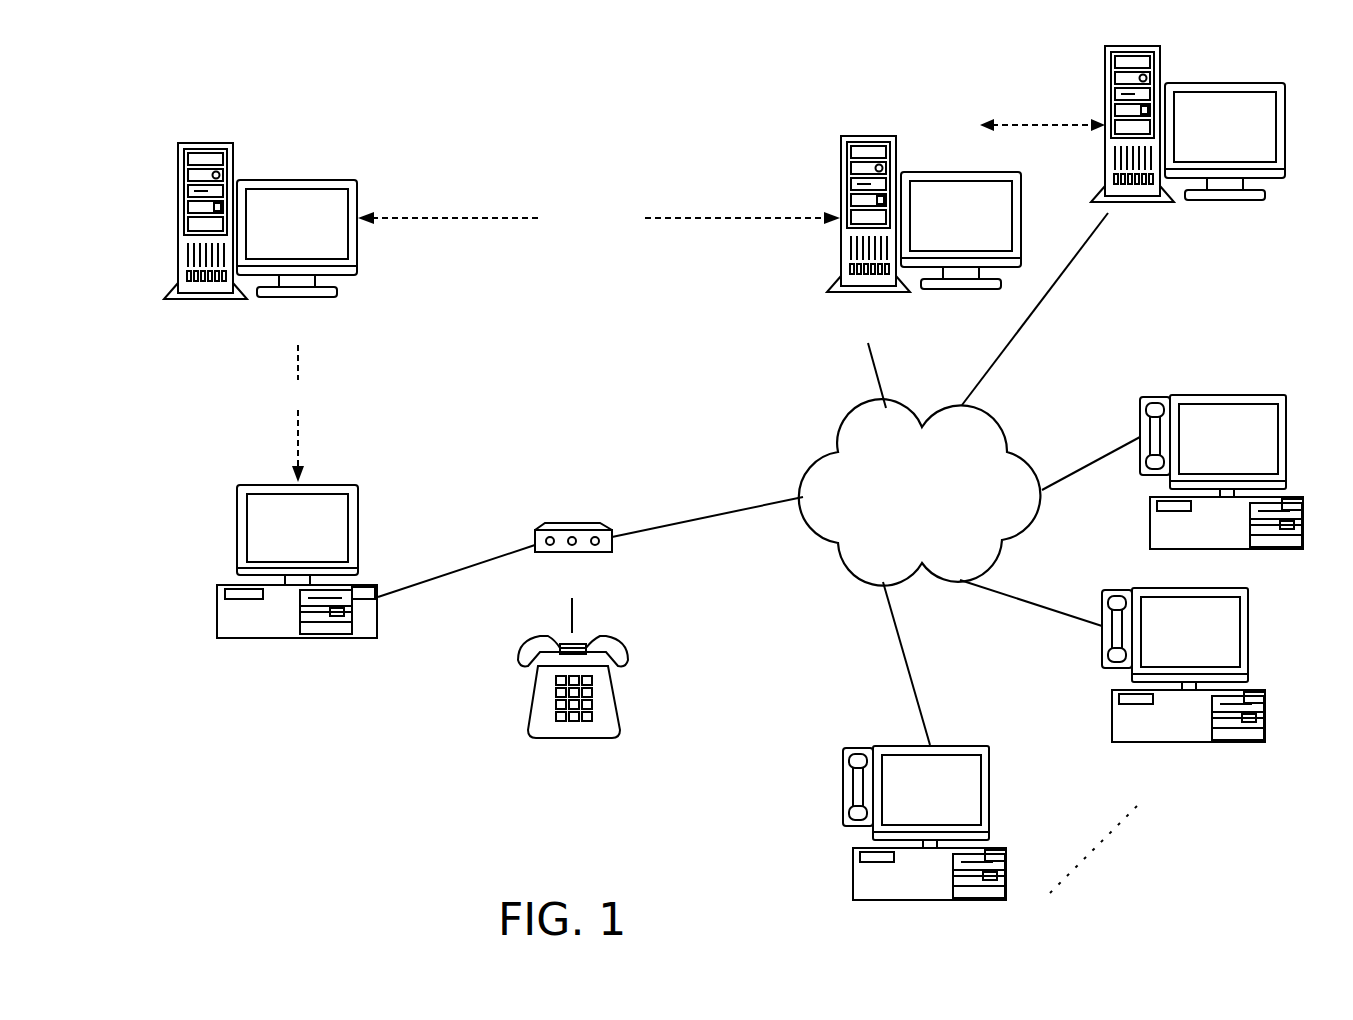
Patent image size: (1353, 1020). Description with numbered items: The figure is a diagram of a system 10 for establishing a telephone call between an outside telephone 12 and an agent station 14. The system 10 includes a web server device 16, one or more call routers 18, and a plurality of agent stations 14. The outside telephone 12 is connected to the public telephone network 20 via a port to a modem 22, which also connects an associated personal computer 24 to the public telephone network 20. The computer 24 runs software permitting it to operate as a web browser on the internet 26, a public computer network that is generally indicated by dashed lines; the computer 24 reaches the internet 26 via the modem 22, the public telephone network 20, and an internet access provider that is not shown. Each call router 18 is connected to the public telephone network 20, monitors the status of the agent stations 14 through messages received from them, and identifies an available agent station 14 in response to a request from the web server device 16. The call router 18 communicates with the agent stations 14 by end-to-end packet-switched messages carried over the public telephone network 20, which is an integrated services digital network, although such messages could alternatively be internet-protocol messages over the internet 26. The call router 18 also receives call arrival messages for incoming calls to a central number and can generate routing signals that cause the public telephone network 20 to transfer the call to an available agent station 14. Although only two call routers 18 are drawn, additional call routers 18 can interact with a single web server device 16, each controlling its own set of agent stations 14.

The system 10 is at (808, 87).
The outside telephone 12 is at (620, 692).
The agent station 14 is at (1150, 512).
The web server device 16 is at (297, 180).
The call router 18 is at (1022, 212).
The public telephone network 20 is at (832, 541).
The modem 22 is at (572, 523).
The personal computer 24 is at (217, 601).
The internet 26 is at (495, 216).